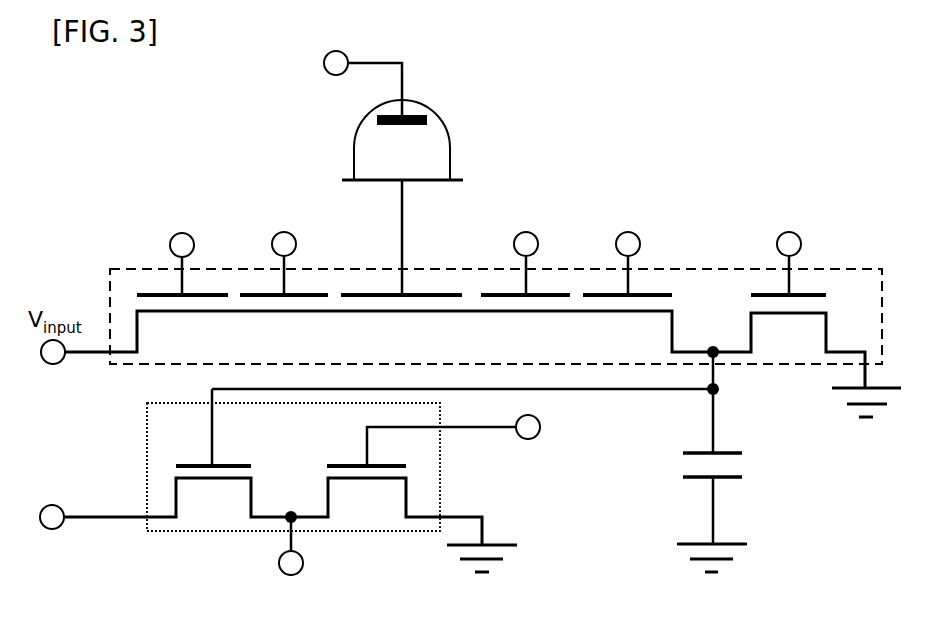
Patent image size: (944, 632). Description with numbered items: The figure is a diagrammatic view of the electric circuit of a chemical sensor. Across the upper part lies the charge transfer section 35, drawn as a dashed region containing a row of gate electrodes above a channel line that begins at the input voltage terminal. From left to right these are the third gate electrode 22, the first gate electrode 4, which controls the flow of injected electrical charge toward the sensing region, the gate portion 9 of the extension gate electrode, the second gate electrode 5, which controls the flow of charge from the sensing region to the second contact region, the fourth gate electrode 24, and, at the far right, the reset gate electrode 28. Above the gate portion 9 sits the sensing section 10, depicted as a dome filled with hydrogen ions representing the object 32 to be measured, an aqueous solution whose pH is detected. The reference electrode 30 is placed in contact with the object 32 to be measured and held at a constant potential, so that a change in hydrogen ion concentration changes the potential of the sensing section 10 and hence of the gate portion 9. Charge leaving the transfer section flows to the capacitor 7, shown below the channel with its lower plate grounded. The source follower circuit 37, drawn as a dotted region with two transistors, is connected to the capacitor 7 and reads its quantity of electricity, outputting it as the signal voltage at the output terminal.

The charge transfer section 35 is at (133, 268).
The third gate electrode 22 is at (208, 293).
The first gate electrode 4 is at (257, 293).
The gate portion 9 is at (370, 293).
The sensing section 10 is at (455, 178).
The reference electrode 30 is at (413, 113).
The object to be measured 32 is at (368, 135).
The second gate electrode 5 is at (548, 293).
The fourth gate electrode 24 is at (653, 293).
The reset gate electrode 28 is at (806, 293).
The capacitor 7 is at (694, 467).
The source follower circuit 37 is at (378, 533).